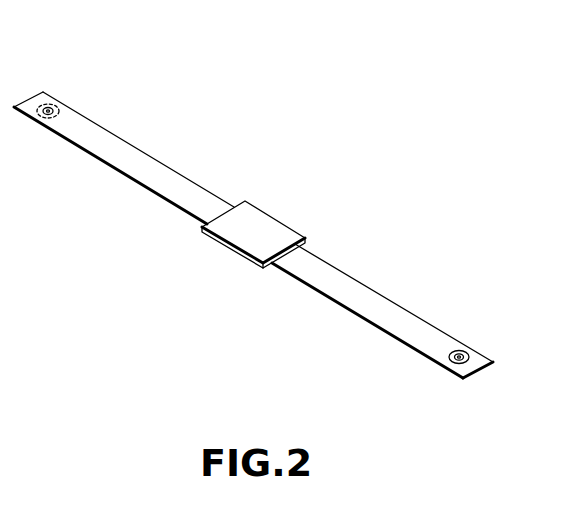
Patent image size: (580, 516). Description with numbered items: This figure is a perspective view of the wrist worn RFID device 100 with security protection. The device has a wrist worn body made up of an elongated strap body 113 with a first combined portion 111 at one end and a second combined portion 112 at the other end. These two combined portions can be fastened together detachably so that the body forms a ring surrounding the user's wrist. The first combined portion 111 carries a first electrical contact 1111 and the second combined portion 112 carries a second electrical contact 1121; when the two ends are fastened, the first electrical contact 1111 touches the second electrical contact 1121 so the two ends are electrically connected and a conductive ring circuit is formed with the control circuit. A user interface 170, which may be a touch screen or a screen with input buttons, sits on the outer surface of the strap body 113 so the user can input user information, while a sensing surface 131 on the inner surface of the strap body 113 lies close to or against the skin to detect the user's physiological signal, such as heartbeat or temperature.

The wrist worn RFID device 100 is at (448, 55).
The first combined portion 111 is at (58, 106).
The first electrical contact 1111 is at (46, 105).
The second combined portion 112 is at (467, 356).
The second electrical contact 1121 is at (459, 356).
The strap body 113 is at (158, 173).
The user interface 170 is at (266, 223).
The sensing surface 131 is at (245, 253).